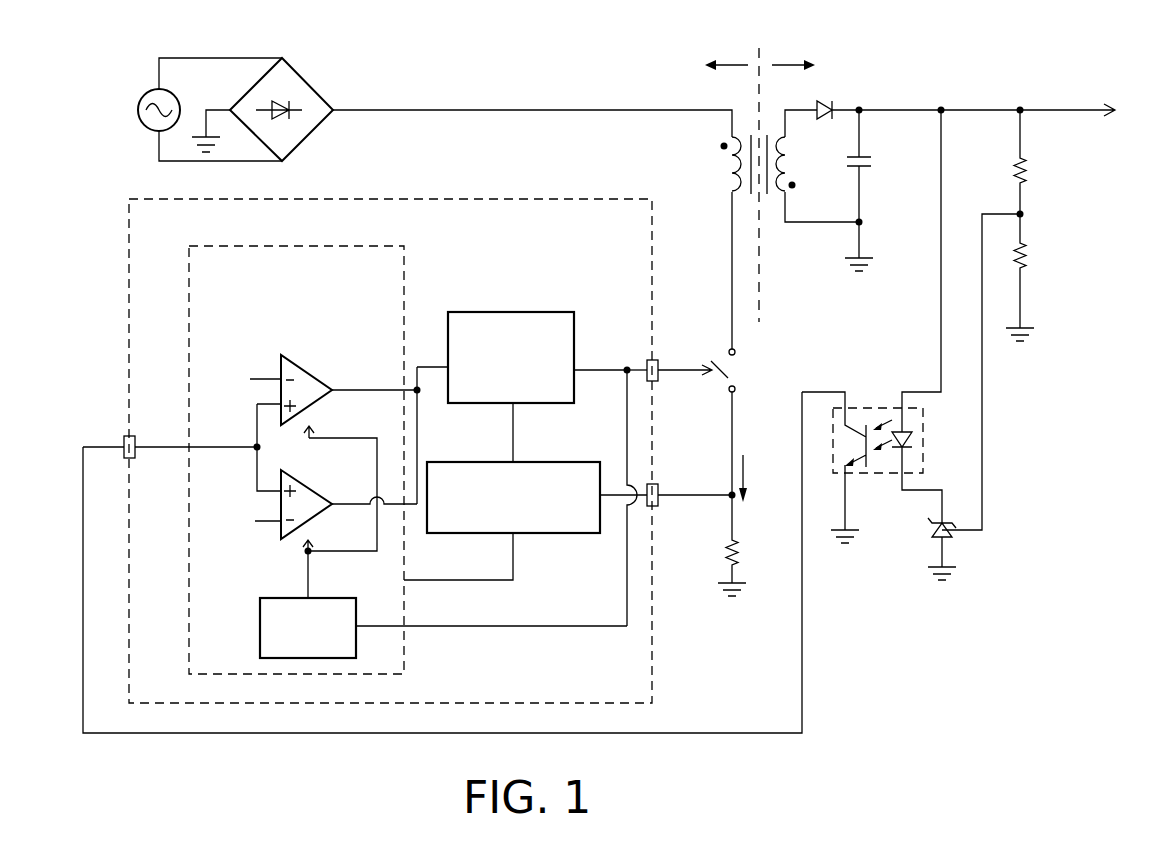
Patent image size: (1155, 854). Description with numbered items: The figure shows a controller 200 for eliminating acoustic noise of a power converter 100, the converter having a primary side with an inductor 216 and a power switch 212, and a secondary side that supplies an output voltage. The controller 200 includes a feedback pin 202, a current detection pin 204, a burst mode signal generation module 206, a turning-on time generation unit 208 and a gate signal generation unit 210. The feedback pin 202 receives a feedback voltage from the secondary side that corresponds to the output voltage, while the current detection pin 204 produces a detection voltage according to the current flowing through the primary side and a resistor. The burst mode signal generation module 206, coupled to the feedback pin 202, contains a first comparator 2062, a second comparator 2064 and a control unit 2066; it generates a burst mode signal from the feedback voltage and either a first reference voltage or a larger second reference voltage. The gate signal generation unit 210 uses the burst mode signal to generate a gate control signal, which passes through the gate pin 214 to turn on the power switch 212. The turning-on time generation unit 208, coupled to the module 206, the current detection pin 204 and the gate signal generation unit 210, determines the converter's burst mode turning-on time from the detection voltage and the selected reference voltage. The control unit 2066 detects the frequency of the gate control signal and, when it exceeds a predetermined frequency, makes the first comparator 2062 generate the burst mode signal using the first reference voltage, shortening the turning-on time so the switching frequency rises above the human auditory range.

The power converter 100 is at (1043, 76).
The controller 200 is at (437, 199).
The feedback pin 202 is at (124, 440).
The current detection pin 204 is at (658, 506).
The burst mode signal generation module 206 is at (406, 275).
The turning-on time generation unit 208 is at (555, 462).
The gate signal generation unit 210 is at (527, 311).
The power switch 212 is at (737, 371).
The gate pin 214 is at (659, 363).
The inductor 216 is at (722, 162).
The first comparator 2062 is at (323, 358).
The second comparator 2064 is at (313, 489).
The control unit 2066 is at (260, 622).